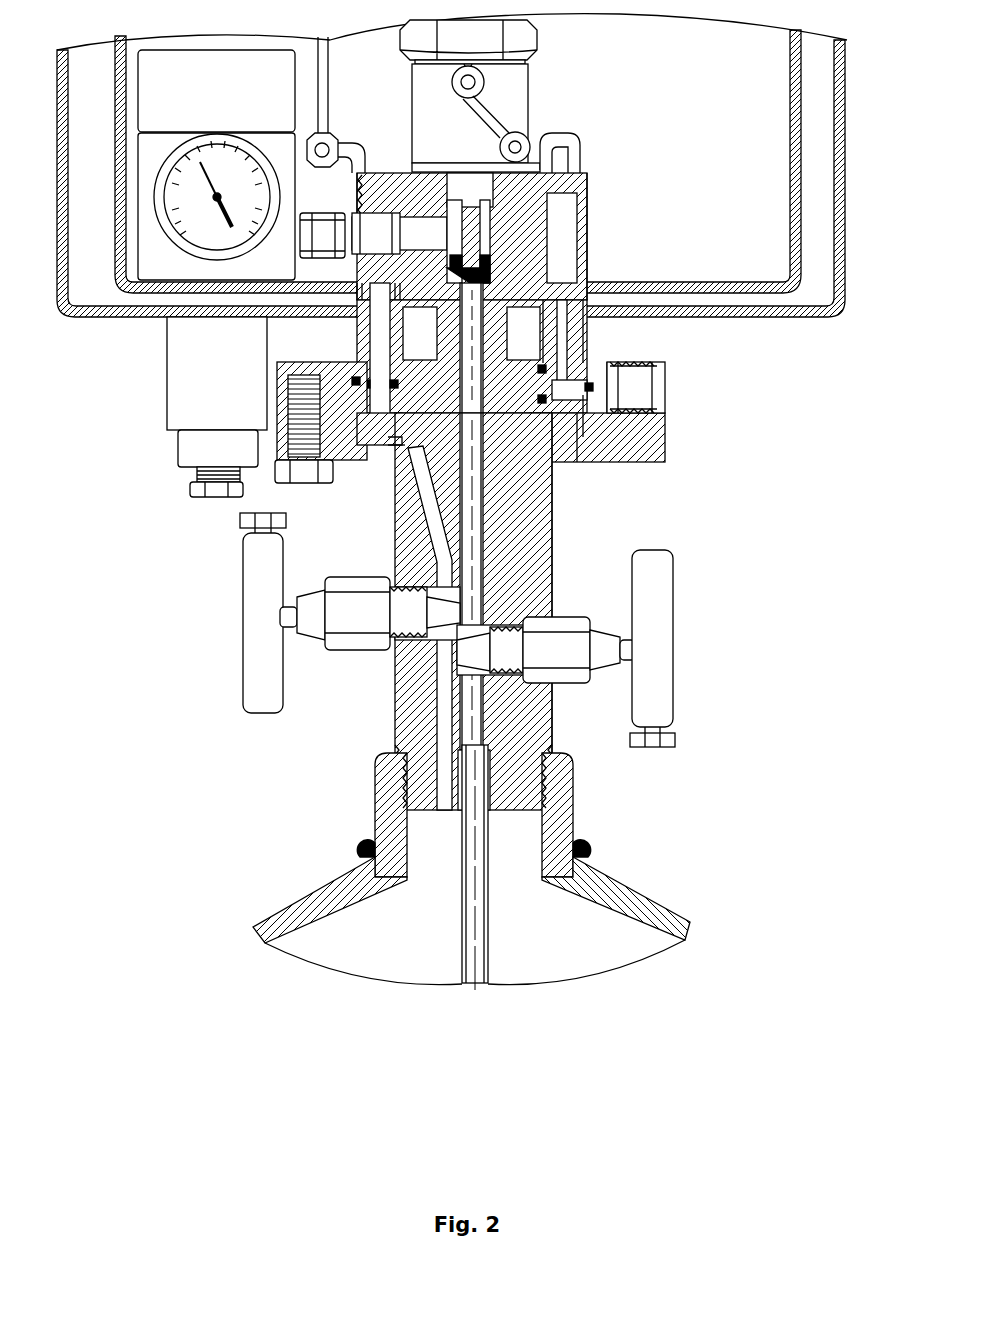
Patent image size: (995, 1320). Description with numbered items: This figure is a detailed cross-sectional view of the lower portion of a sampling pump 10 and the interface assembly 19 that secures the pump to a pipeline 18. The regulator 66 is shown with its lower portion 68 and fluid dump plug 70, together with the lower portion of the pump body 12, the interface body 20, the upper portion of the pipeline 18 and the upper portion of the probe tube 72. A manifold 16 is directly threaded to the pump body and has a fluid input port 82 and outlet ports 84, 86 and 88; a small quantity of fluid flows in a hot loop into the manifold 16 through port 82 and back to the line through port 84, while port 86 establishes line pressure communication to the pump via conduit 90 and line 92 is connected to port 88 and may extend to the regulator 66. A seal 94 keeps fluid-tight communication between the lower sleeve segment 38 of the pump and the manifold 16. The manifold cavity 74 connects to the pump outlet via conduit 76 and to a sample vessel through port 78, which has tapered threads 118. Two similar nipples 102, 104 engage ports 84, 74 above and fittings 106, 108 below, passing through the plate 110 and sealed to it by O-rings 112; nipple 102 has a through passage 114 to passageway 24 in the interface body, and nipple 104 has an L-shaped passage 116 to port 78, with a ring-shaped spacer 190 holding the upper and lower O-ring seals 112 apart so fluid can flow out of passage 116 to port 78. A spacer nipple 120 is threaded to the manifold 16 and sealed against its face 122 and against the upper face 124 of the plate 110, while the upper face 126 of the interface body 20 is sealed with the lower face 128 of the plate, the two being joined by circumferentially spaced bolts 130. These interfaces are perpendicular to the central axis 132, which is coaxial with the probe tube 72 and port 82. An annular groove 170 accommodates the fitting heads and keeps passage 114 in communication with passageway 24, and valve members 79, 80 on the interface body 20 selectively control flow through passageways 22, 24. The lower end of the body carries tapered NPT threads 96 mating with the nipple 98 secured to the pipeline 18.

The sampling pump 10 is at (560, 43).
The body 12 is at (518, 103).
The manifold 16 is at (535, 252).
The pipeline 18 is at (635, 896).
The interface assembly 19 is at (592, 546).
The interface body 20 is at (531, 763).
The passageway 22 is at (482, 535).
The passageway 24 is at (438, 578).
The lower sleeve segment 38 is at (512, 195).
The regulator 66 is at (172, 262).
The lower portion 68 is at (178, 406).
The fluid dump plug 70 is at (196, 492).
The probe tube 72 is at (492, 950).
The manifold cavity 74 is at (568, 240).
The conduit 76 is at (570, 148).
The port 78 is at (658, 382).
The valve member 79 is at (578, 623).
The valve member 80 is at (352, 642).
The fluid input port 82 is at (478, 330).
The outlet port 84 is at (370, 263).
The outlet port 86 is at (372, 178).
The outlet port 88 is at (374, 240).
The conduit 90 is at (328, 118).
The line 92 is at (313, 240).
The seal 94 is at (507, 222).
The tapered NPT threads 96 is at (548, 780).
The nipple 98 is at (385, 830).
The nipple 102 is at (363, 395).
The nipple 104 is at (572, 428).
The fitting 106 is at (388, 445).
The fitting 108 is at (583, 405).
The plate 110 is at (617, 365).
The O-rings 112 is at (355, 379).
The through passage 114 is at (375, 360).
The L-shaped passage 116 is at (563, 327).
The tapered threads 118 is at (668, 393).
The spacer nipple 120 is at (525, 334).
The face 122 is at (424, 334).
The upper face 124 is at (300, 358).
The upper face 126 is at (545, 372).
The lower face 128 is at (402, 440).
The bolts 130 is at (296, 476).
The central axis 132 is at (478, 485).
The annular groove 170 is at (358, 442).
The ring-shaped spacer 190 is at (588, 398).